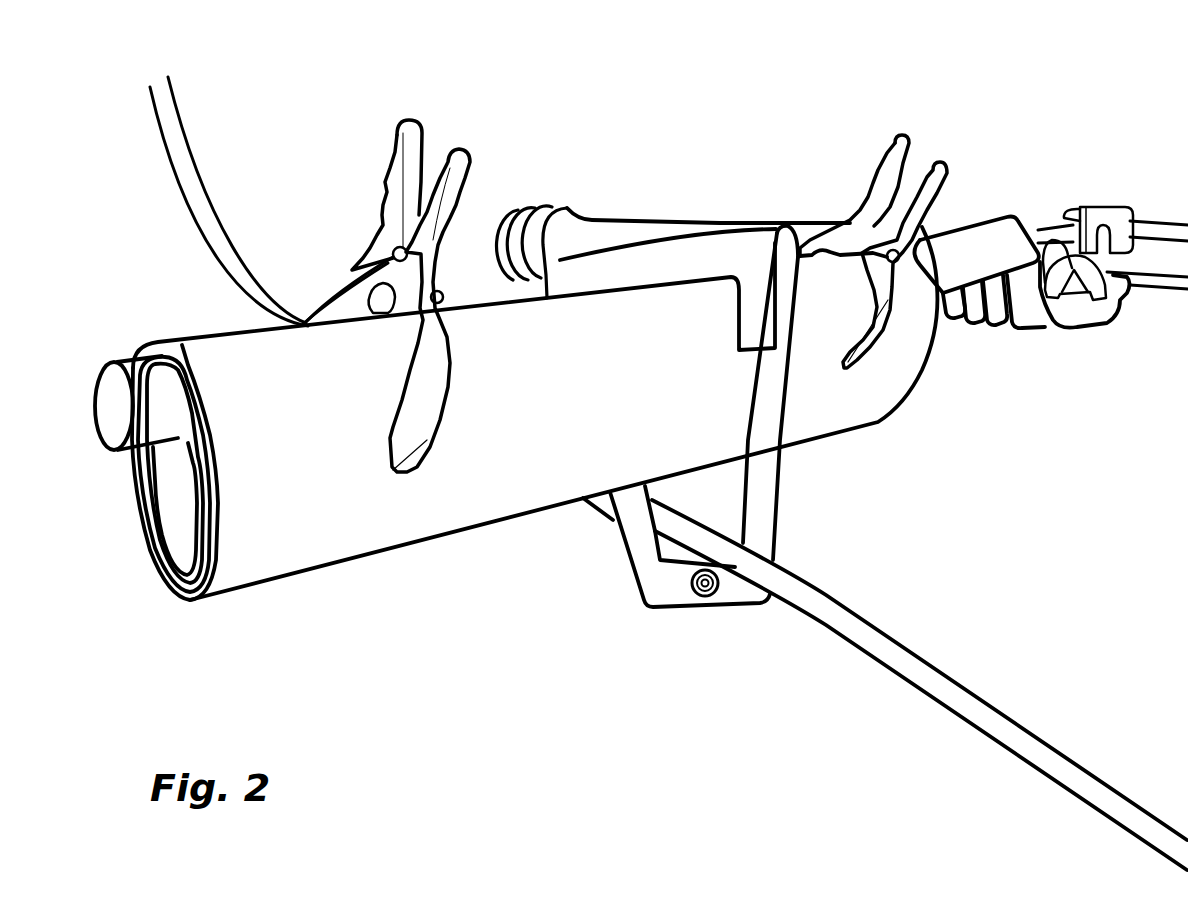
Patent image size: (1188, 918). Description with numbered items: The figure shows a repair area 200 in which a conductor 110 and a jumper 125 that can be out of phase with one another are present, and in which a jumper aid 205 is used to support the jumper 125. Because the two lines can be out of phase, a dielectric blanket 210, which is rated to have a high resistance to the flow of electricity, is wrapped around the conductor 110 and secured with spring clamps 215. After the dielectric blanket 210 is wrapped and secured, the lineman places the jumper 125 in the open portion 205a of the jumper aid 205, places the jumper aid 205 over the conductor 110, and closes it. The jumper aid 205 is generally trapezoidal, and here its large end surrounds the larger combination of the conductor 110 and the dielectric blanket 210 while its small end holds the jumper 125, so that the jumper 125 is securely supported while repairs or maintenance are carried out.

The repair area 200 is at (316, 113).
The dielectric blanket 210 is at (432, 543).
The spring clamps 215 is at (462, 152).
The conductor 110 is at (1032, 217).
The jumper aid 205 is at (633, 580).
The open portion 205a is at (722, 492).
The jumper 125 is at (880, 627).